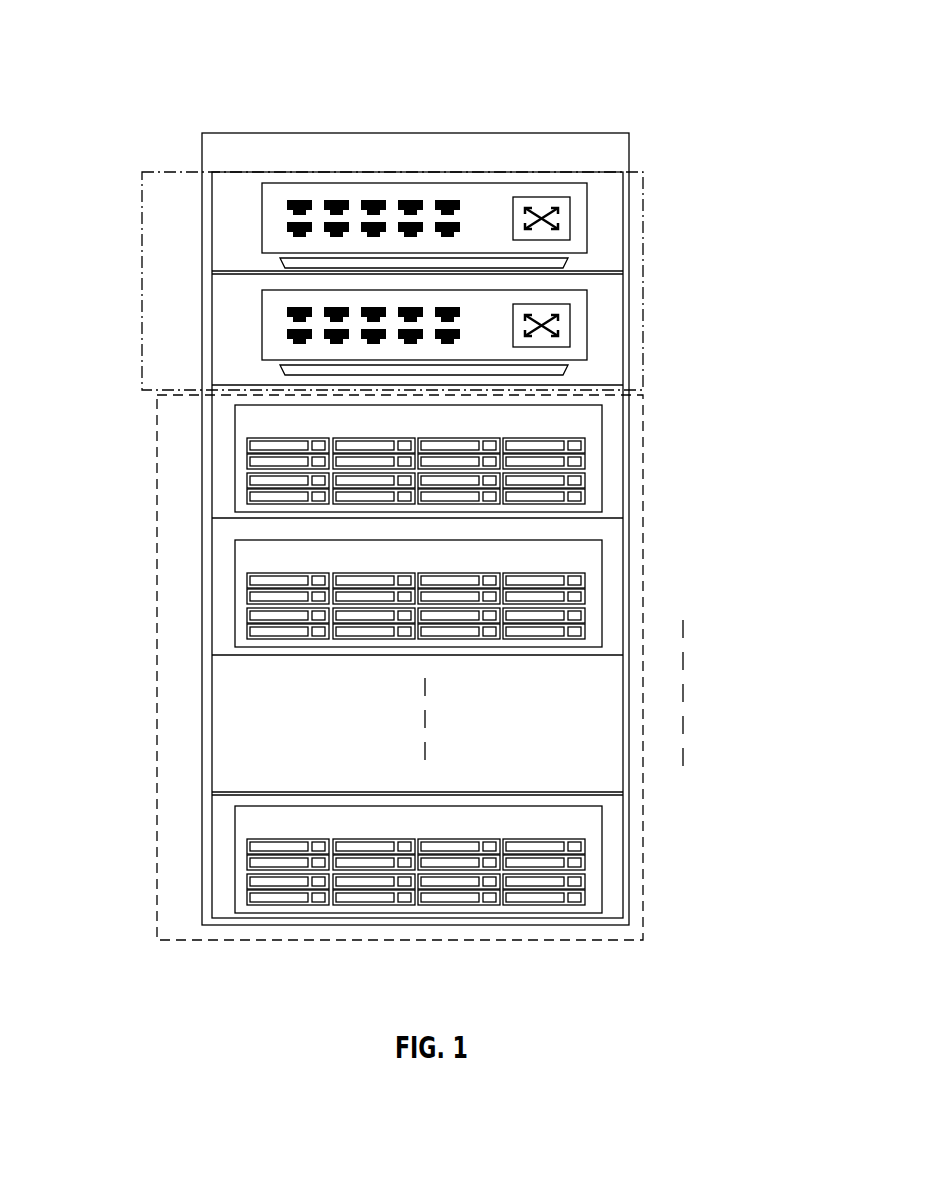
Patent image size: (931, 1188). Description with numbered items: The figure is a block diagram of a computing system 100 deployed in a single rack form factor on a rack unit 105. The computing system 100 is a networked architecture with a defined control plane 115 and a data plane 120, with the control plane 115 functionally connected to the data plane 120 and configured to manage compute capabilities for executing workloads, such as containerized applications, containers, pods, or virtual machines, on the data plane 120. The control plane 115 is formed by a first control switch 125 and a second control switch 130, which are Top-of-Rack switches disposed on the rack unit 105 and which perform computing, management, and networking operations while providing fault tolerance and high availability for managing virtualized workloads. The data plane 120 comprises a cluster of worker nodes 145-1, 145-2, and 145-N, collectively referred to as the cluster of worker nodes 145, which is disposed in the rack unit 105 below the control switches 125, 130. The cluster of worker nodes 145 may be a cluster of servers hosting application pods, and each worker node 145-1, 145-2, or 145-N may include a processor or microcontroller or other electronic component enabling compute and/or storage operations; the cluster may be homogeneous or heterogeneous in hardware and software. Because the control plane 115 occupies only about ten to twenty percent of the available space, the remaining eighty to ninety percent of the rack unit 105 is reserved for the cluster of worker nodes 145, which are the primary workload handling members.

The computing system 100 is at (448, 31).
The rack unit 105 is at (435, 133).
The control plane 115 is at (386, 281).
The data plane 120 is at (442, 667).
The first control switch 125 is at (587, 232).
The second control switch 130 is at (587, 345).
The cluster of worker nodes 145 is at (520, 659).
The worker node 145-1 is at (602, 473).
The worker node 145-2 is at (602, 572).
The worker node 145-N is at (478, 859).